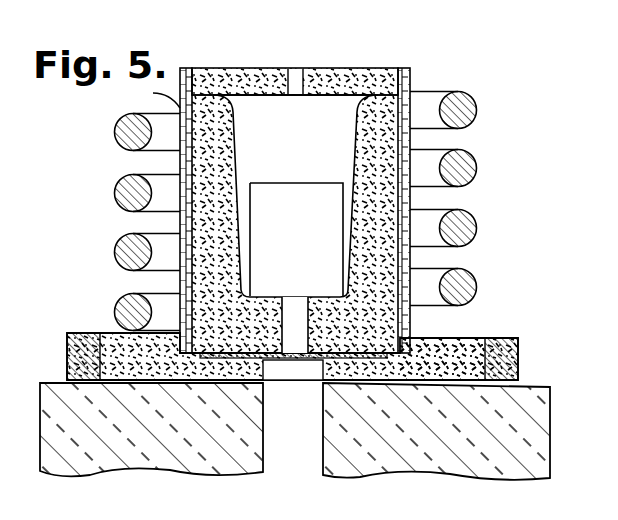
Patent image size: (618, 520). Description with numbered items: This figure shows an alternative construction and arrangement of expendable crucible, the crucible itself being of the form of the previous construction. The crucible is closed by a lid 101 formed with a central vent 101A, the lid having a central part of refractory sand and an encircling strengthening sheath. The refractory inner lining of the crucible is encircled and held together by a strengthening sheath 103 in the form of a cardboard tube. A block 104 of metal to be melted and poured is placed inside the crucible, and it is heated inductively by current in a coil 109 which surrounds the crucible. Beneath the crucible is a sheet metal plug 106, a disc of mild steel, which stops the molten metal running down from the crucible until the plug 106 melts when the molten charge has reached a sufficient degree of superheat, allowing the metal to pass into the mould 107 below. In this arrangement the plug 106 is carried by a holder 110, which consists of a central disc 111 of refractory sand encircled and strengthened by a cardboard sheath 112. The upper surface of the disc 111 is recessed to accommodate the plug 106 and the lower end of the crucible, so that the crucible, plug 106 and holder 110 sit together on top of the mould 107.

The lid 101 is at (367, 92).
The central vent 101A is at (295, 67).
The strengthening sheath 103 is at (412, 145).
The block of metal 104 is at (298, 239).
The sheet metal plug 106 is at (297, 362).
The mould 107 is at (533, 434).
The coil 109 is at (127, 144).
The holder 110 is at (65, 330).
The central disc 111 is at (470, 339).
The cardboard sheath 112 is at (519, 363).